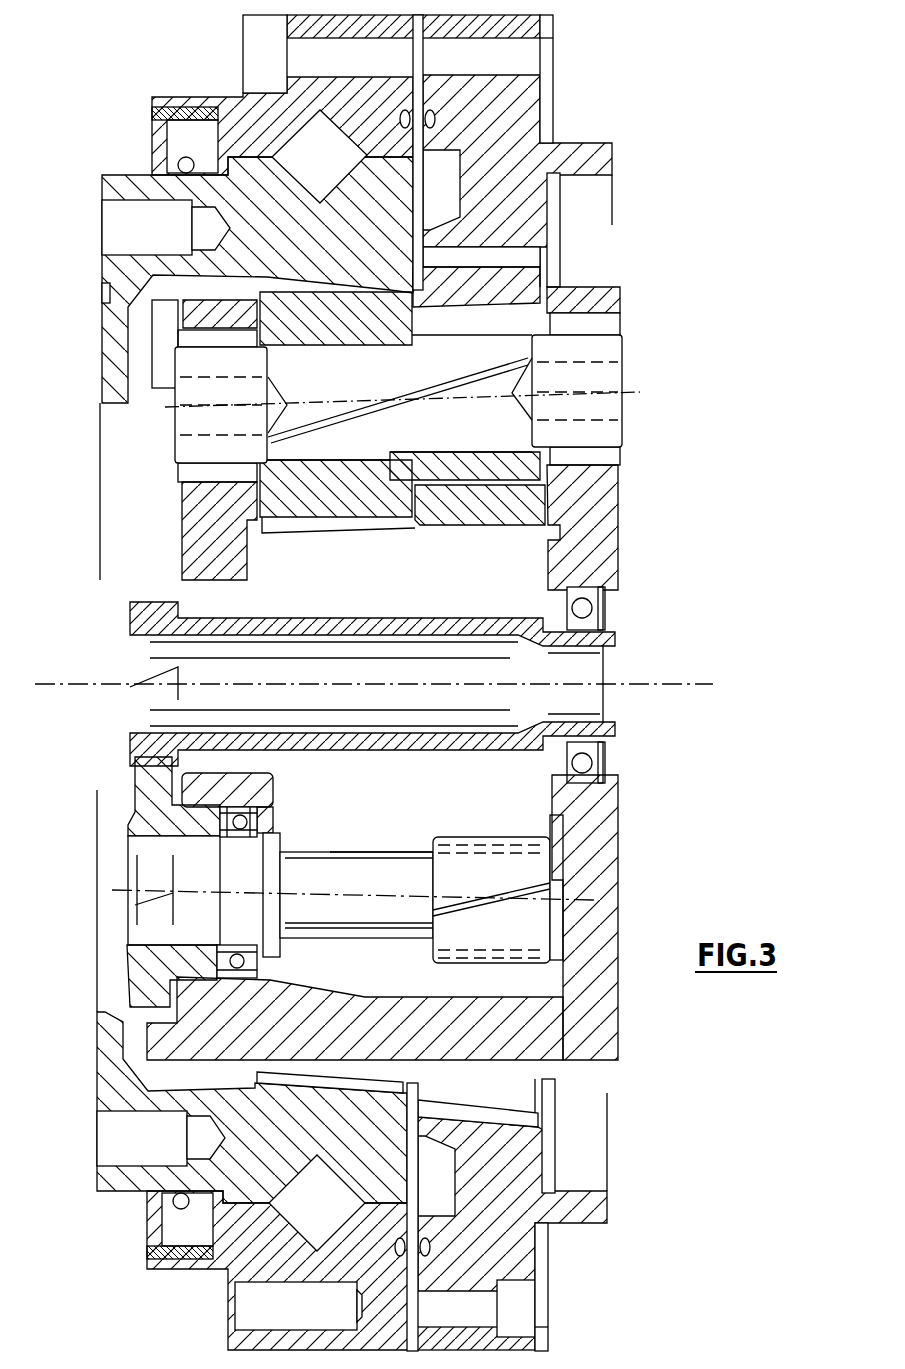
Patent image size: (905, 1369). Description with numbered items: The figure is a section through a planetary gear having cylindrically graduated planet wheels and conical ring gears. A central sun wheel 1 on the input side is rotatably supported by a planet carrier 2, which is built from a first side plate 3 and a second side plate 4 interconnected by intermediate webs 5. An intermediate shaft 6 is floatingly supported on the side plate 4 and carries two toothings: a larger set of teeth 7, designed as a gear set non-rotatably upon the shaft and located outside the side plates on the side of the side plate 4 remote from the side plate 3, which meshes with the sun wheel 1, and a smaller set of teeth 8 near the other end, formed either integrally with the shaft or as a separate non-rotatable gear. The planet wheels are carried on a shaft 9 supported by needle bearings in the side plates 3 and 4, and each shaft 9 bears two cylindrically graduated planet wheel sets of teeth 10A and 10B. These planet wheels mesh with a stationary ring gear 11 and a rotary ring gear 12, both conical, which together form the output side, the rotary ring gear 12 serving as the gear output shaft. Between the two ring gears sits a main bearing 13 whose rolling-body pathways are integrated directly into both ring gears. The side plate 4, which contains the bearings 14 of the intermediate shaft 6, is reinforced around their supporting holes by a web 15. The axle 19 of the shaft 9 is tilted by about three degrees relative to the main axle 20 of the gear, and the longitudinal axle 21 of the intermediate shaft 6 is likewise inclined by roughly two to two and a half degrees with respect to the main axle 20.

The sun wheel 1 is at (162, 622).
The planet carrier 2 is at (640, 537).
The first side plate 3 is at (605, 913).
The second side plate 4 is at (197, 560).
The intermediate webs 5 is at (362, 1007).
The intermediate shaft 6 is at (324, 862).
The larger set of teeth 7 is at (143, 800).
The smaller set of teeth 8 is at (493, 837).
The shaft 9 is at (607, 348).
The planet wheel set of teeth 10A is at (340, 497).
The planet wheel set of teeth 10B is at (477, 515).
The stationary ring gear 11 is at (527, 117).
The rotary ring gear 12 is at (378, 205).
The main bearing 13 is at (298, 143).
The bearings 14 is at (270, 790).
The web 15 is at (162, 368).
The axle 19 is at (612, 398).
The main axle 20 is at (672, 687).
The longitudinal axle 21 is at (369, 860).